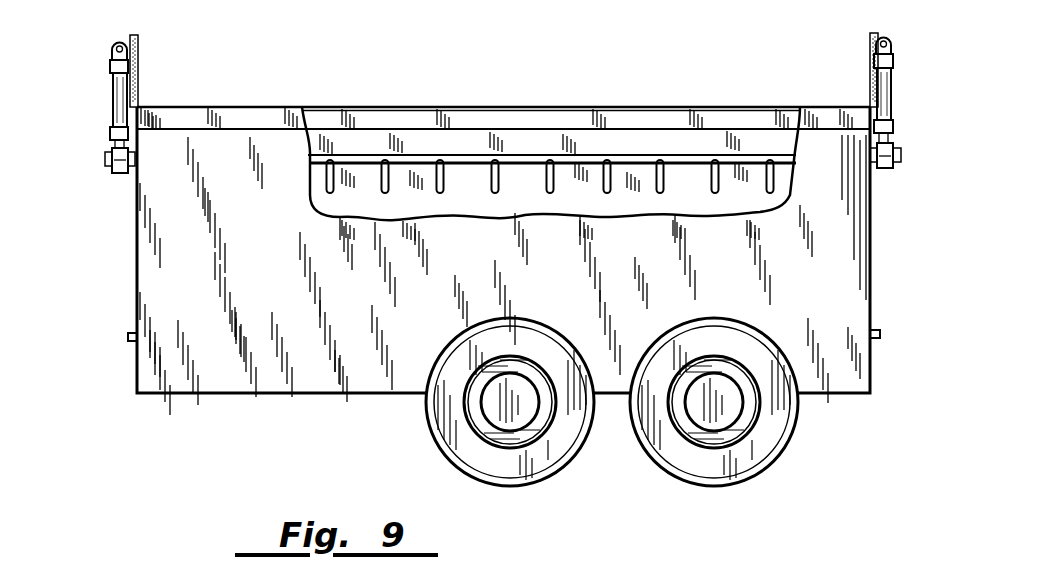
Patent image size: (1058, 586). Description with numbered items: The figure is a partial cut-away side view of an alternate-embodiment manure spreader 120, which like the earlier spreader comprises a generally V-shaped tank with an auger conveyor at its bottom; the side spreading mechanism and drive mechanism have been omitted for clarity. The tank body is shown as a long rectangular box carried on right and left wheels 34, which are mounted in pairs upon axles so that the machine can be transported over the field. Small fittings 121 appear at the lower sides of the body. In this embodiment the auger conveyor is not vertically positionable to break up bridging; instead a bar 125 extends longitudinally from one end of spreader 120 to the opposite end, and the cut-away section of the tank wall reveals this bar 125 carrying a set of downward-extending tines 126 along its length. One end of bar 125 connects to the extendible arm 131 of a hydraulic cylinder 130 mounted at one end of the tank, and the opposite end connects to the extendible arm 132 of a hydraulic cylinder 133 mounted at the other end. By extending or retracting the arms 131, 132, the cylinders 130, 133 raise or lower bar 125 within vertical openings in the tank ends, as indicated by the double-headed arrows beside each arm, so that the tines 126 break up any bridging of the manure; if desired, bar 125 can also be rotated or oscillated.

The spreader 120 is at (832, 395).
The side clips 121 is at (128, 337).
The bar 125 is at (523, 158).
The tines 126 is at (710, 178).
The hydraulic cylinder 130 is at (893, 86).
The extendible arm 131 is at (891, 168).
The extendible arm 132 is at (113, 172).
The hydraulic cylinder 133 is at (112, 96).
The wheels 34 is at (560, 474).